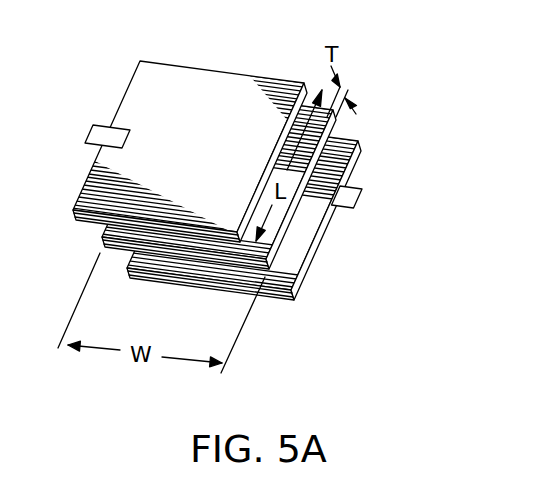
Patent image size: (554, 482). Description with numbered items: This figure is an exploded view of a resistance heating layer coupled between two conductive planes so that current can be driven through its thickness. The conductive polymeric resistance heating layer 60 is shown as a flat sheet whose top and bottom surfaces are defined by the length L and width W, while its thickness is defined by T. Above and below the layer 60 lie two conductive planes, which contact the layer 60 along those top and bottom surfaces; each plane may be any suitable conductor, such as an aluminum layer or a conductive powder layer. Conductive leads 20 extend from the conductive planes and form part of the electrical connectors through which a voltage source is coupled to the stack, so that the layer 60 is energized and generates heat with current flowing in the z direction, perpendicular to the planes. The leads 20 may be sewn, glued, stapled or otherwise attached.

The conductive lead 20 is at (95, 131).
The conductive polymeric resistance heating layer 60 is at (103, 234).